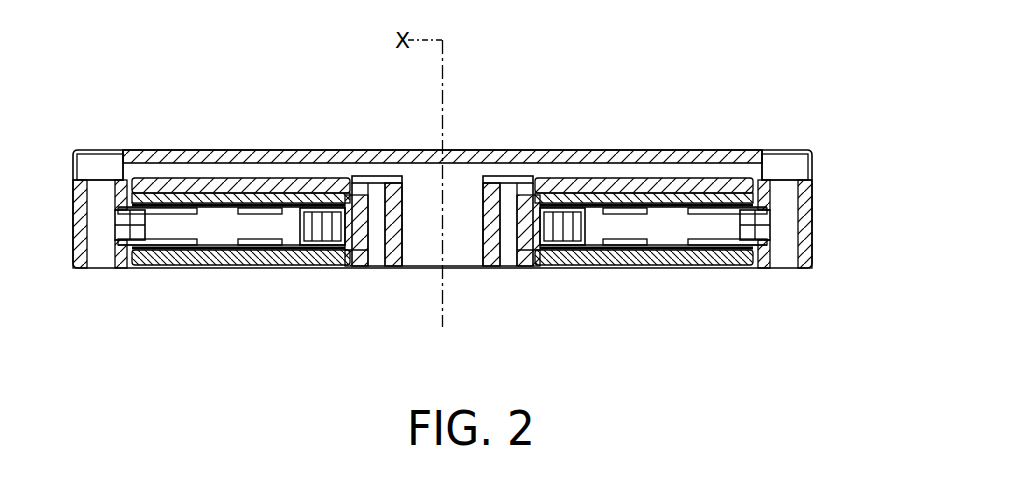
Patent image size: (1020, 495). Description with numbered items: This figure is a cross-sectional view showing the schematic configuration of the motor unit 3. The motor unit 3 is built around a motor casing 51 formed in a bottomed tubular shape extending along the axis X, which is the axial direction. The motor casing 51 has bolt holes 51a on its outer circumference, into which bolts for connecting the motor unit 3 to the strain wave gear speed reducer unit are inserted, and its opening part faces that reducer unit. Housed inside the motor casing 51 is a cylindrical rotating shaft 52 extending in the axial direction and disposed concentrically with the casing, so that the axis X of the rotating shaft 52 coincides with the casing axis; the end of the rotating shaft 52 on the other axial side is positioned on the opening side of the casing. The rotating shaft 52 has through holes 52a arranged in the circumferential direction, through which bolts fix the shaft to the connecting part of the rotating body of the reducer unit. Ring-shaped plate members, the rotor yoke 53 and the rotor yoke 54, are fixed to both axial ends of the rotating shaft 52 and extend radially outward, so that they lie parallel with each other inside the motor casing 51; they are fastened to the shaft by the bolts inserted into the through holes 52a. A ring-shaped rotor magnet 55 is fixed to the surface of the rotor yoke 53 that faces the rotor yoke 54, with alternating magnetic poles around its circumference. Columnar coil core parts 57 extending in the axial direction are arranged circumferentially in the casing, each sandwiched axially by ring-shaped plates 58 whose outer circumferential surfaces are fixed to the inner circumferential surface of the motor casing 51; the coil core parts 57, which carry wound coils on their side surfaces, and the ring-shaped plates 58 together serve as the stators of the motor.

The motor unit 3 is at (786, 108).
The motor casing 51 is at (633, 160).
The bolt holes 51a is at (94, 203).
The rotating shaft 52 is at (494, 240).
The through holes 52a is at (378, 190).
The rotor yoke 53 is at (694, 185).
The rotor yoke 54 is at (660, 255).
The rotor magnet 55 is at (273, 200).
The coil core parts 57 is at (278, 245).
The ring-shaped plates 58 is at (163, 243).